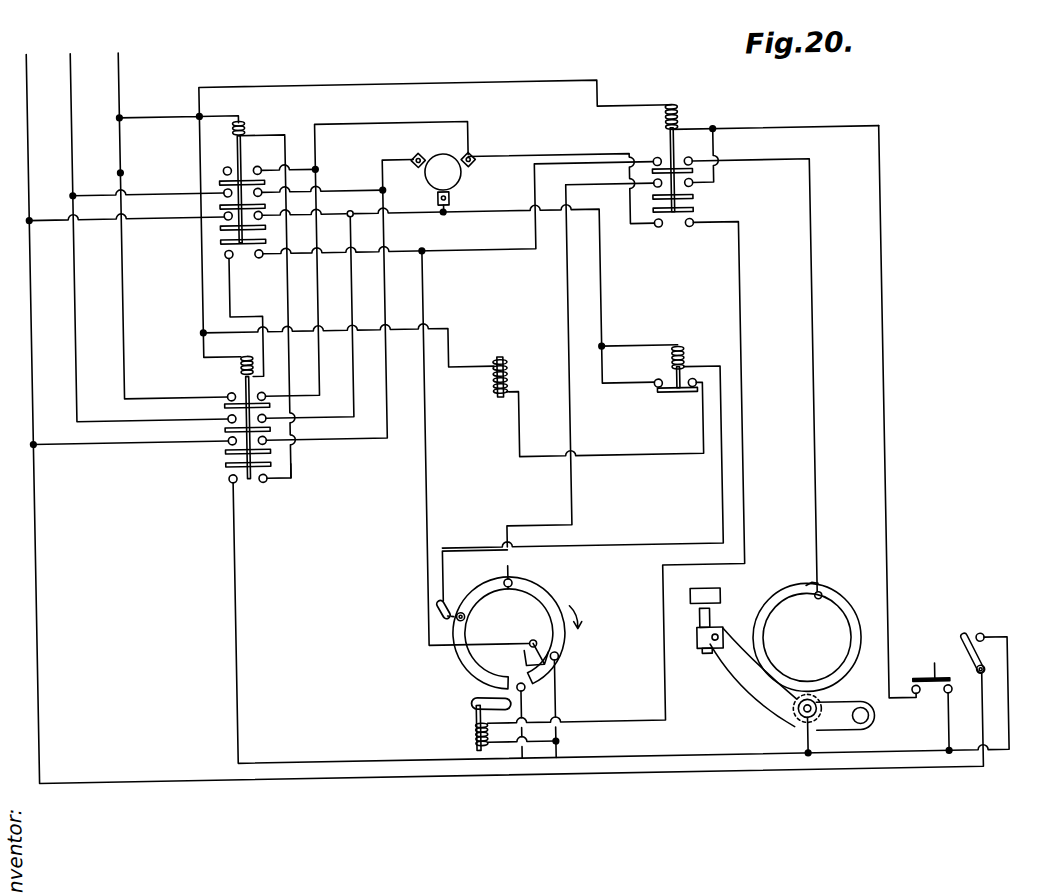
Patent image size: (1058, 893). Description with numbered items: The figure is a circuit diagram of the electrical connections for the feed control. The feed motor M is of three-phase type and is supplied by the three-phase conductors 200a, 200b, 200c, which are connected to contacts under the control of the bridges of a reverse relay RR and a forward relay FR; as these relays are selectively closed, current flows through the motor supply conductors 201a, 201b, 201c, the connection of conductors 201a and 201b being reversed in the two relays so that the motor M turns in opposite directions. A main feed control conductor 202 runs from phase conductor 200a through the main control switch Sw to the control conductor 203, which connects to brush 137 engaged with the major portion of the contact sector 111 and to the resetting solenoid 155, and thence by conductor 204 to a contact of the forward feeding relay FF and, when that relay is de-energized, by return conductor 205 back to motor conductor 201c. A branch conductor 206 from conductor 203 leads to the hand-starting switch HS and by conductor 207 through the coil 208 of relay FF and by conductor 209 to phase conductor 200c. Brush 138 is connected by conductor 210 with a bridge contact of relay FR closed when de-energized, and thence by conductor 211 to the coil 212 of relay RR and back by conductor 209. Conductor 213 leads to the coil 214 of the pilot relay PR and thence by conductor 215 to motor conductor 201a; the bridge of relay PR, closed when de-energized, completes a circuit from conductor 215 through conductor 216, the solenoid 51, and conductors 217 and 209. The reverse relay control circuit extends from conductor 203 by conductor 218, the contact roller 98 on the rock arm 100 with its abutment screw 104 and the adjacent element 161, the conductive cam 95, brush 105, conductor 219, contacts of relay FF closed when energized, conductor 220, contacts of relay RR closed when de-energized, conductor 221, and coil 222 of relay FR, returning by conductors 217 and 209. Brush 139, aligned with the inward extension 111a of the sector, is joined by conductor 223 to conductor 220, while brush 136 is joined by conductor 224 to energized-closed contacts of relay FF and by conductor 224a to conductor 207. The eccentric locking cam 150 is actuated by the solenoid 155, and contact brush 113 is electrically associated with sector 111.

The three-phase conductor 200a is at (125, 249).
The three-phase conductor 200b is at (147, 236).
The three-phase conductor 200c is at (171, 225).
The main feed control conductor 202 is at (508, 605).
The conductor 209 is at (396, 207).
The coil of the reverse relay 212 is at (242, 120).
The reverse relay RR is at (247, 307).
The conductor 215 is at (470, 296).
The conductor 220 is at (458, 209).
The conductor 221 is at (248, 317).
The conductor 217 is at (319, 311).
The coil of the forward relay 222 is at (212, 367).
The forward relay FR is at (233, 429).
The motor supply conductor 201c is at (367, 272).
The motor supply conductor 201a is at (327, 326).
The motor supply conductor 201b is at (340, 313).
The conductor 211 is at (309, 468).
The conductor 210 is at (621, 617).
The feed motor M is at (443, 182).
The return conductor 205 is at (561, 176).
The coil of forward feeding relay 208 is at (680, 103).
The forward feeding relay FF is at (650, 173).
The conductor 224a is at (776, 164).
The conductor 219 is at (775, 375).
The conductor 207 is at (908, 411).
The conductor 204 is at (632, 473).
The solenoid 51 is at (519, 374).
The conductor 216 is at (605, 434).
The coil of the pilot relay 214 is at (695, 353).
The pilot relay PR is at (659, 375).
The conductor 224 is at (580, 391).
The conductor 213 is at (475, 447).
The feed control contact sector 111 is at (517, 626).
The brush 136 is at (527, 567).
The contact brush 113 is at (485, 609).
The brush 139 is at (530, 632).
The inward extension 111a is at (514, 656).
The brush 137 is at (581, 698).
The brush 138 is at (557, 716).
The conductor 223 is at (415, 620).
The eccentric locking cam 150 is at (467, 710).
The resetting solenoid 155 is at (489, 729).
The cam member 95 is at (817, 631).
The contact brush 105 is at (803, 576).
The rock arm 100 is at (749, 678).
The roller 98 is at (835, 703).
The conductor 218 is at (787, 736).
The abutment screw 104 is at (725, 624).
The stop 161 is at (722, 585).
The hand-starting switch HS is at (930, 663).
The branch conductor 206 is at (929, 723).
The main control switch Sw is at (973, 636).
The control conductor 203 is at (872, 720).